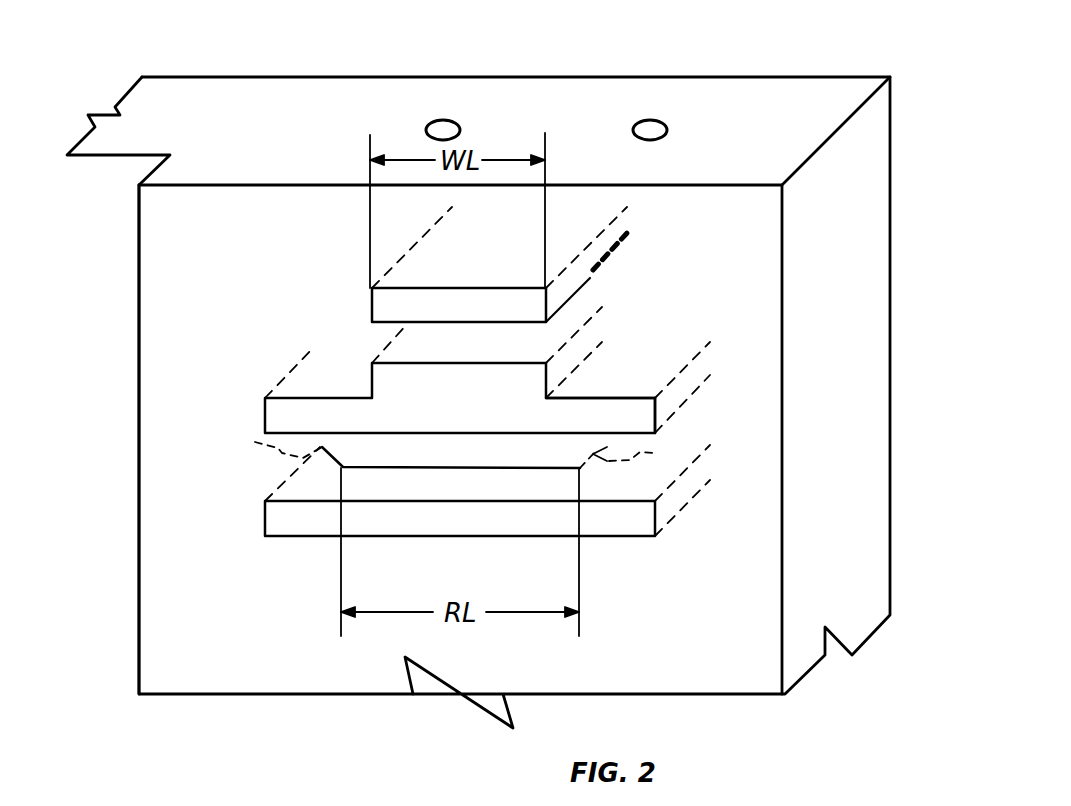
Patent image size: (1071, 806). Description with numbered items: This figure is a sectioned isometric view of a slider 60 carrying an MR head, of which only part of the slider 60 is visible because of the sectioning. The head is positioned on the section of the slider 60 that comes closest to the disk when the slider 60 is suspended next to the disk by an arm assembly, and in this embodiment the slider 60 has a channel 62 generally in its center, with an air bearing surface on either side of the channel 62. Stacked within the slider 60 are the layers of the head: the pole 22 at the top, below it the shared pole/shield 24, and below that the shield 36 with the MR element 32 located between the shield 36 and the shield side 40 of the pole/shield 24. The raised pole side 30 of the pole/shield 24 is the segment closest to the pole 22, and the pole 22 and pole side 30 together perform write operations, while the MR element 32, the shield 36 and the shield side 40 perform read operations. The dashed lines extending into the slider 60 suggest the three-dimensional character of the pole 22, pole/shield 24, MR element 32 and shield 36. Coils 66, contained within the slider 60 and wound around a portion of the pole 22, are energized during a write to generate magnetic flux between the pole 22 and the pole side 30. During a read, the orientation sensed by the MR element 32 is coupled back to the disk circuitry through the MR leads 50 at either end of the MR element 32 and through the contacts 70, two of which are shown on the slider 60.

The pole (P1) 22 is at (372, 300).
The shared pole/shield (P2/S1) 24 is at (605, 403).
The pole side 30 is at (382, 383).
The MR element 32 is at (363, 468).
The shield (S2) 36 is at (655, 527).
The shield side 40 is at (653, 415).
The leads 50 is at (456, 450).
The slider 60 is at (885, 445).
The channel 62 is at (147, 482).
The coils 66 is at (620, 247).
The contacts 70 is at (633, 122).